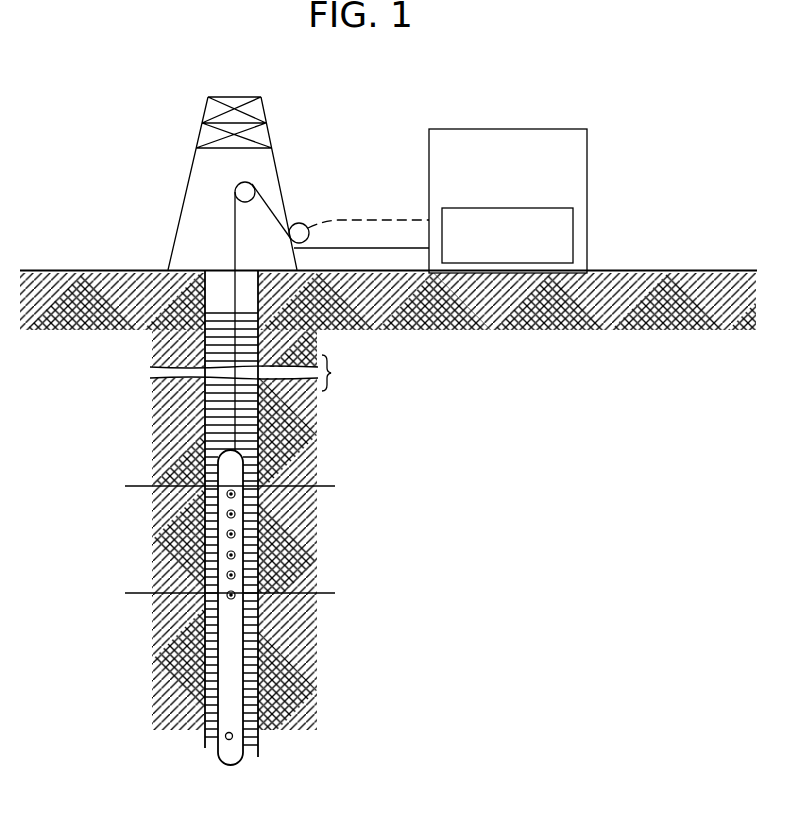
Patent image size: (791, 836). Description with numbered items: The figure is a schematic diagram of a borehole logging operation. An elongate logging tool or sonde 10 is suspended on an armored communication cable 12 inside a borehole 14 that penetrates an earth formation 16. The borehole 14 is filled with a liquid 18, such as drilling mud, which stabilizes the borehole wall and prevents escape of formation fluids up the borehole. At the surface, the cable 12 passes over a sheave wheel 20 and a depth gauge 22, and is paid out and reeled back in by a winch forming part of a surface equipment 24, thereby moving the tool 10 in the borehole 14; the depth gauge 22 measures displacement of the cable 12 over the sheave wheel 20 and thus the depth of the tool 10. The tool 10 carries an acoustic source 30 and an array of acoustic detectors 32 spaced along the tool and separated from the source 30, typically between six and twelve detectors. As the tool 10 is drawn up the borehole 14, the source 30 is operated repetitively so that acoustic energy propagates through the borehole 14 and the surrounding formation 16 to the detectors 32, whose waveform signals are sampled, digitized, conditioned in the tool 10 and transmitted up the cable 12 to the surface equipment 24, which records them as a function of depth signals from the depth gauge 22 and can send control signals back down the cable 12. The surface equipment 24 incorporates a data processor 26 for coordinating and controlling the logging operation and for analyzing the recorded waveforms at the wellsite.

The logging tool or sonde 10 is at (229, 764).
The armored communication cable 12 is at (233, 248).
The borehole 14 is at (205, 499).
The earth formation 16 is at (178, 703).
The liquid 18 is at (215, 433).
The sheave wheel 20 is at (240, 193).
The depth gauge 22 is at (297, 236).
The surface equipment 24 is at (588, 158).
The data processor 26 is at (574, 236).
The acoustic source 30 is at (233, 737).
The acoustic detectors 32 is at (236, 515).